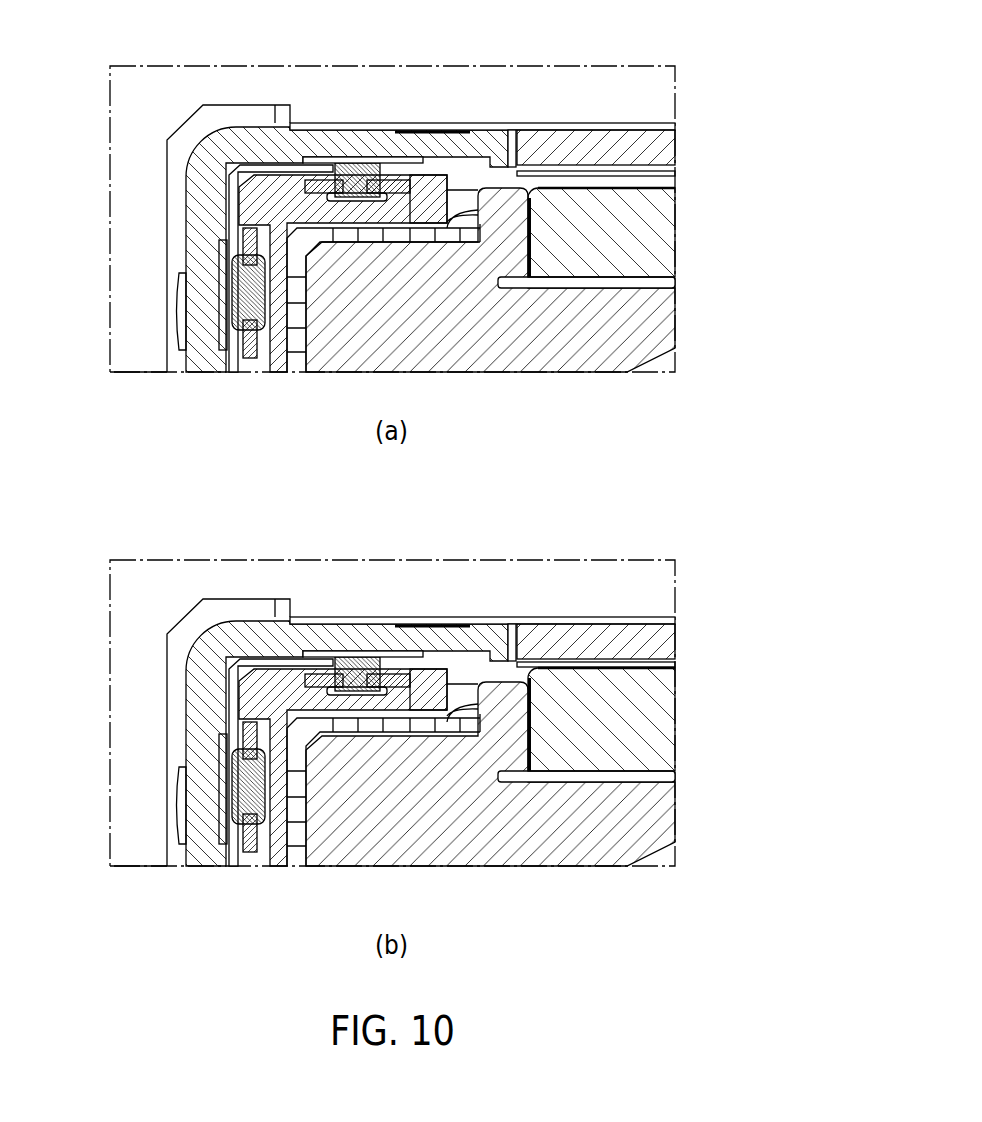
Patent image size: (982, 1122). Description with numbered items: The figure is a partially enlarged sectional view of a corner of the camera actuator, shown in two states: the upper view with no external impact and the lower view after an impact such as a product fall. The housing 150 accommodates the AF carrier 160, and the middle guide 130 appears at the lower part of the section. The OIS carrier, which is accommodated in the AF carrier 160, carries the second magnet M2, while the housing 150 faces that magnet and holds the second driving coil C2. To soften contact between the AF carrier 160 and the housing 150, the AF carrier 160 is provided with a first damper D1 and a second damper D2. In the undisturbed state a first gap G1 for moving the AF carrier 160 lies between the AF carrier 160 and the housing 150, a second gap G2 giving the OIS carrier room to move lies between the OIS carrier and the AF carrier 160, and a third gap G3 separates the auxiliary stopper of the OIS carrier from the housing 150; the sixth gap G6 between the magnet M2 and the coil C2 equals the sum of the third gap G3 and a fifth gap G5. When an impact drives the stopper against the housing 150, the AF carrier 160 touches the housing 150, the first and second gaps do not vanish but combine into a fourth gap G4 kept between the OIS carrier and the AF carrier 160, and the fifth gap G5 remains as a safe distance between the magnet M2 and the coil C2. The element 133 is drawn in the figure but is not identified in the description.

The housing 150 is at (306, 143).
The first damper D1 is at (338, 167).
The AF carrier 160 is at (433, 187).
The side wall of middle frame 133 is at (515, 170).
The second driving coil C2 is at (662, 150).
The second magnet M2 is at (658, 242).
The middle guide 130 is at (658, 327).
The second damper D2 is at (238, 297).
The first gap G1 is at (360, 175).
The second gap G2 is at (348, 200).
The third gap G3 is at (493, 195).
The fourth gap G4 is at (398, 677).
The fifth gap G5 is at (577, 695).
The sixth gap G6 is at (603, 200).